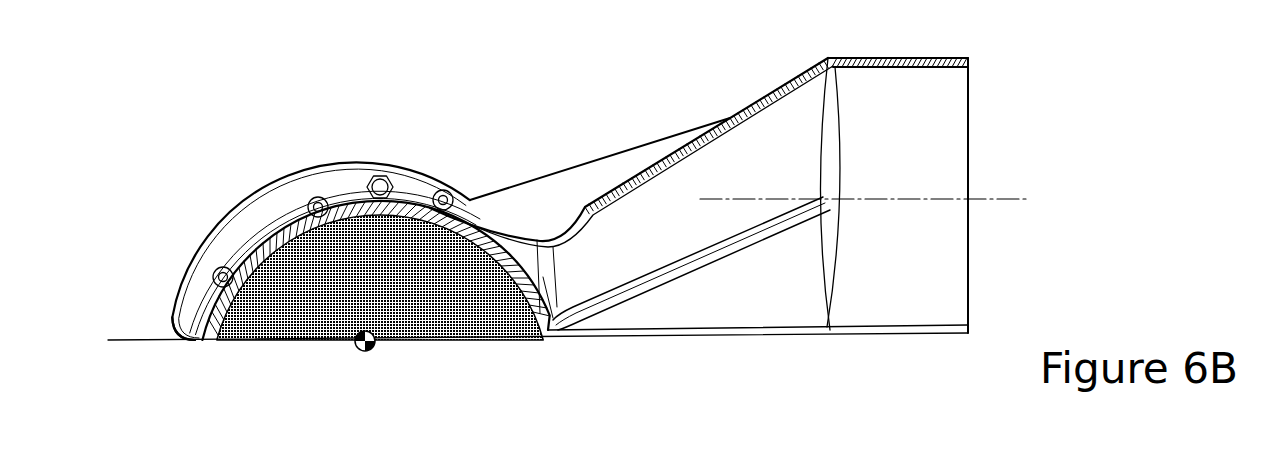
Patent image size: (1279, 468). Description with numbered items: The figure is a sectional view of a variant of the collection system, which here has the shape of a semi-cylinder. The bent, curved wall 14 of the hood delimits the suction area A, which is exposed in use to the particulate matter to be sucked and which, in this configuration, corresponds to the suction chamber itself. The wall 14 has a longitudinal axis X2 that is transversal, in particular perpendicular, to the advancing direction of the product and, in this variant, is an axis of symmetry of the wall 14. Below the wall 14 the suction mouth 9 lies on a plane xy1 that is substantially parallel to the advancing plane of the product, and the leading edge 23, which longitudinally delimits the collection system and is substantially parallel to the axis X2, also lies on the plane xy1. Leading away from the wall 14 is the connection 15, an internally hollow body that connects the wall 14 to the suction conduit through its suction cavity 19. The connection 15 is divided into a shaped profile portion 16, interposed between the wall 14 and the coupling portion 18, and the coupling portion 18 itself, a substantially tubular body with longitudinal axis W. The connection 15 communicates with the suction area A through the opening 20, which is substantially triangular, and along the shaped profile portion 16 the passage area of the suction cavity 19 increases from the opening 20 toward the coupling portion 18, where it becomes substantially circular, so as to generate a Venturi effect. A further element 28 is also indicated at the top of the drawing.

The suction mouth 9 is at (432, 348).
The wall 14 is at (357, 198).
The connection 15 is at (601, 184).
The shaped profile portion 16 is at (697, 142).
The coupling portion 18 is at (922, 58).
The suction cavity 19 is at (893, 71).
The opening 20 is at (558, 254).
The leading edge 23 is at (185, 327).
The upper element 28 is at (604, 6).
The suction area A is at (317, 263).
The plane of the suction mouth xy1 is at (160, 344).
The longitudinal axis of the wall X2 is at (371, 353).
The longitudinal axis of the coupling portion W is at (1002, 200).